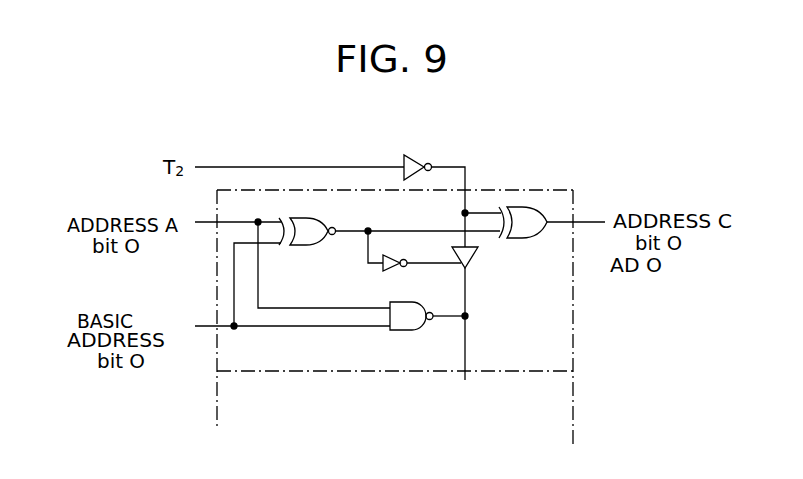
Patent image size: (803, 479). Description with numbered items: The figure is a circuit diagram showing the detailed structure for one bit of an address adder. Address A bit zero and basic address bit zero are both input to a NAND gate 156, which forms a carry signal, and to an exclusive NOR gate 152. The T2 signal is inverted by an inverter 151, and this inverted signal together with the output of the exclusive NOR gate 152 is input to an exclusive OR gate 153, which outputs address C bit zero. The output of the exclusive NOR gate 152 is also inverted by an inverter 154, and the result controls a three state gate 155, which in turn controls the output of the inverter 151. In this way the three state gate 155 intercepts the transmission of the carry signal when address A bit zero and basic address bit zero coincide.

The inverter 151 is at (408, 157).
The exclusive NOR gate 152 is at (322, 222).
The exclusive OR gate 153 is at (523, 207).
The inverter 154 is at (383, 270).
The three state gate 155 is at (479, 258).
The NAND gate 156 is at (403, 331).